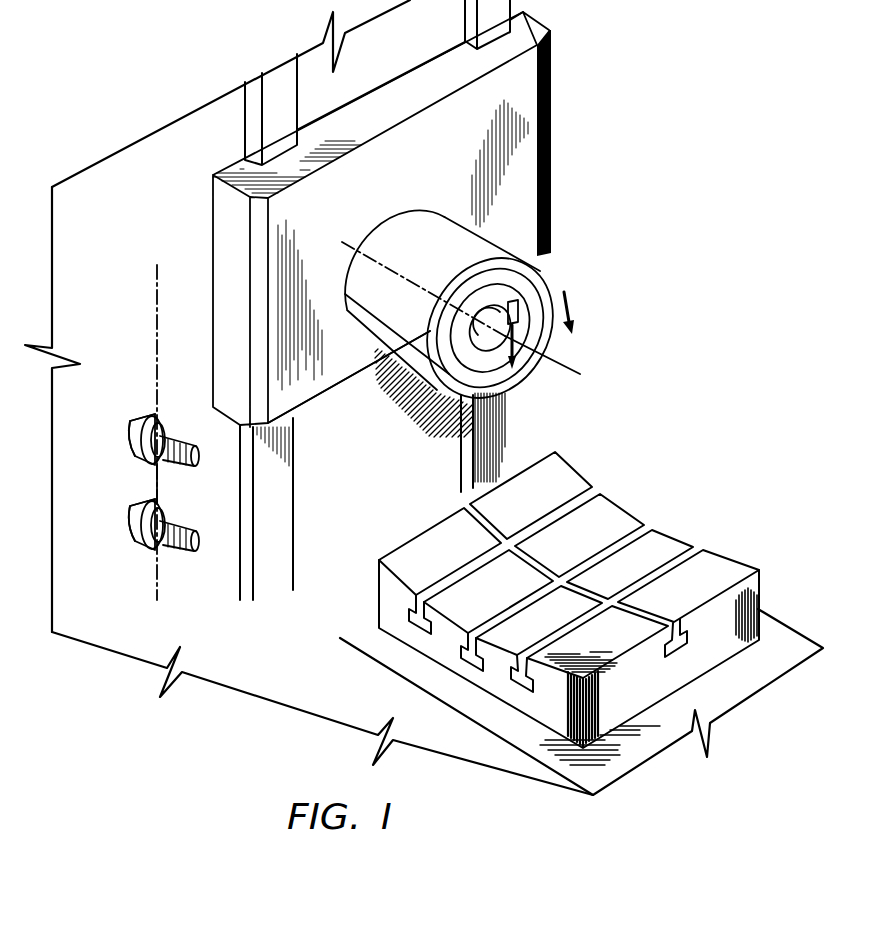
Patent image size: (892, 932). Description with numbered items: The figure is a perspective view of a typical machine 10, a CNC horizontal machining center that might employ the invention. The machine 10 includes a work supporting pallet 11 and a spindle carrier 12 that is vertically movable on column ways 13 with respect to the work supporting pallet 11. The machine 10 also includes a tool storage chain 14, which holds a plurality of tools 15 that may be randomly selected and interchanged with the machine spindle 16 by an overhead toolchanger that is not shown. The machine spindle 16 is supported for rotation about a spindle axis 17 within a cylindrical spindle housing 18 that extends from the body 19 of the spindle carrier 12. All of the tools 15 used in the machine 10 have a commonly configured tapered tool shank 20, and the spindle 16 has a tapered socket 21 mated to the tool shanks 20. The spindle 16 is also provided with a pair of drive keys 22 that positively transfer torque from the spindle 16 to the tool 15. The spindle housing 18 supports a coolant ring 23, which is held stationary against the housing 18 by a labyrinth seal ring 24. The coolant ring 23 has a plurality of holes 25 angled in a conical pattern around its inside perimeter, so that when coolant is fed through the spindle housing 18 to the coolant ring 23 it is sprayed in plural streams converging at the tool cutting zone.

The machine 10 is at (636, 146).
The work supporting pallet 11 is at (640, 497).
The spindle carrier 12 is at (553, 107).
The column ways 13 is at (298, 100).
The tool storage chain 14 is at (160, 480).
The tools 15 is at (180, 434).
The machine spindle 16 is at (442, 394).
The spindle axis 17 is at (566, 368).
The cylindrical spindle housing 18 is at (408, 375).
The body 19 is at (310, 400).
The tapered tool shank 20 is at (133, 437).
The tapered socket 21 is at (480, 333).
The drive keys 22 is at (483, 272).
The coolant ring 23 is at (525, 372).
The labyrinth seal ring 24 is at (478, 418).
The holes 25 is at (545, 290).